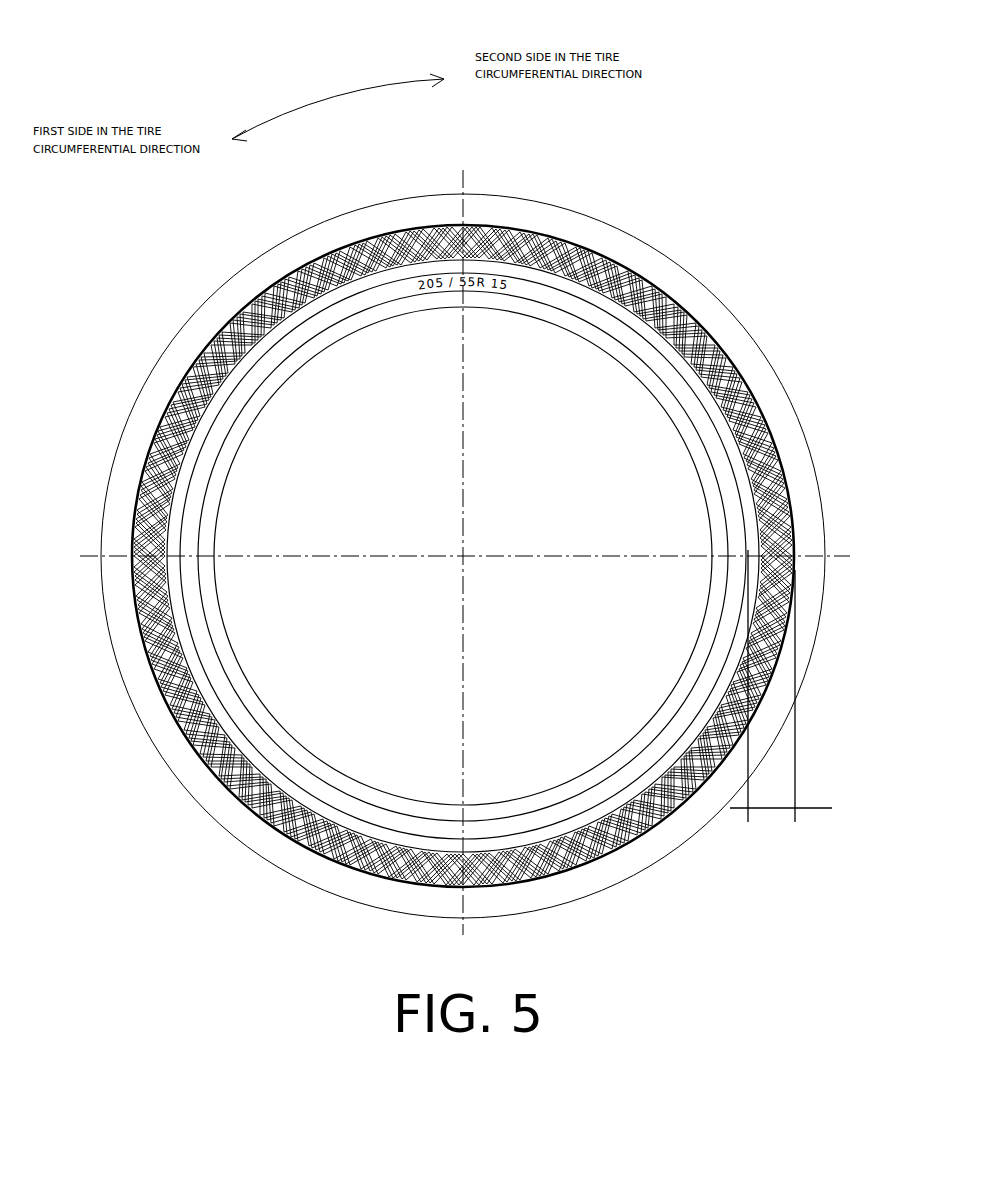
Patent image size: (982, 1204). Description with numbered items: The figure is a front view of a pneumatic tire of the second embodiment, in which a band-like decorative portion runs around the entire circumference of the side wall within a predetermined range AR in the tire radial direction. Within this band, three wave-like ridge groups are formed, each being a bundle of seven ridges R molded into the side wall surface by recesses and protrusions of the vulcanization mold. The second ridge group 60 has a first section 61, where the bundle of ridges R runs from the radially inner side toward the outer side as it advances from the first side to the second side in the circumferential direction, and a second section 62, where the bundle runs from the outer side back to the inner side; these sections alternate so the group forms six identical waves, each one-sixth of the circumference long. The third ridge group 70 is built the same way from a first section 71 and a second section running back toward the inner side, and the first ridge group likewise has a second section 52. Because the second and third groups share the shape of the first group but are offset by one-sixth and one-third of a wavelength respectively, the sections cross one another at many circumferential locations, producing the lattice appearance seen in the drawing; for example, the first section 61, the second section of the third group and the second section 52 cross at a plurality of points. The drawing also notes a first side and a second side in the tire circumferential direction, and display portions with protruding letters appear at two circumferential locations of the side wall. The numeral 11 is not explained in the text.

The sidewall outer surface 11 is at (714, 325).
The second section of the first ridge group 52 is at (355, 250).
The second ridge group 60 is at (366, 232).
The first section of the second ridge group 61 is at (527, 270).
The second section of the second ridge group 62 is at (415, 235).
The third ridge group 70 is at (260, 283).
The first section of the third ridge group 71 is at (471, 232).
The ridge R is at (255, 312).
The predetermined range AR is at (781, 686).